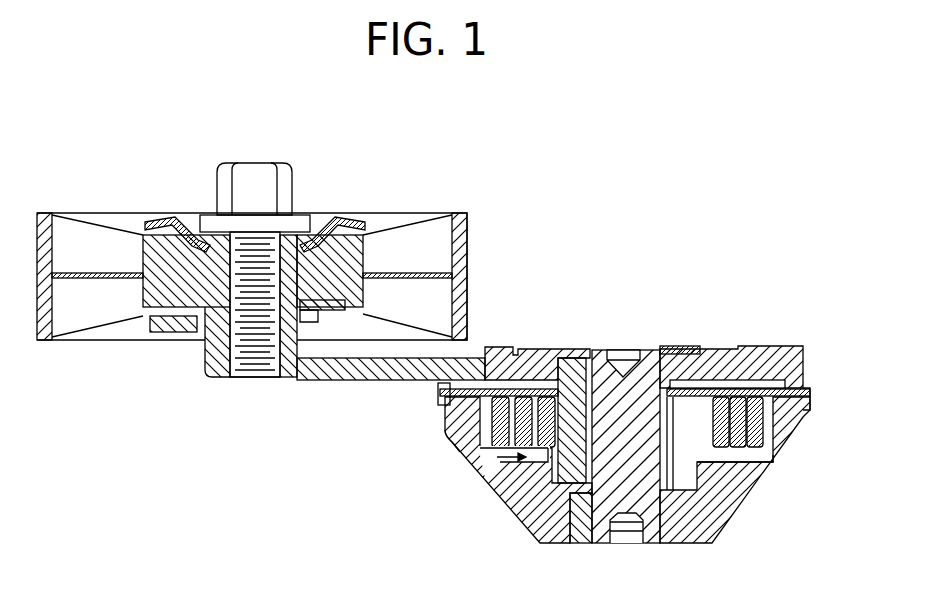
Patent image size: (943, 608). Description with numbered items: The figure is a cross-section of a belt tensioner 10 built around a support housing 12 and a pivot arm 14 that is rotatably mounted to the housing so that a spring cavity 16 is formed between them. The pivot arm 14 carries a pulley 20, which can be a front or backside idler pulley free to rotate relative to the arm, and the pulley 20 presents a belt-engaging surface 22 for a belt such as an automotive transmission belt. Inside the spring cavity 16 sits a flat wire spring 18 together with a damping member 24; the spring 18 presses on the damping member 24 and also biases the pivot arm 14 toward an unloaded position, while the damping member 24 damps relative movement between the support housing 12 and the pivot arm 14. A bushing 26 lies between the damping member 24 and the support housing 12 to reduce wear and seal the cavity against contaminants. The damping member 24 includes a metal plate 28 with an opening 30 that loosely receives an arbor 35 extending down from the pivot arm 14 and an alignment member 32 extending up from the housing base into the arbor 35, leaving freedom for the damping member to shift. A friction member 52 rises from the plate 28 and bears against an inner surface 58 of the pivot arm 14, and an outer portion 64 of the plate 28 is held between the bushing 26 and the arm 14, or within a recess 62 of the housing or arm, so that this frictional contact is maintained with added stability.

The belt tensioner 10 is at (598, 218).
The support housing 12 is at (767, 468).
The pivot arm 14 is at (328, 367).
The spring cavity 16 is at (487, 463).
The flat wire spring 18 is at (740, 447).
The pulley 20 is at (434, 232).
The belt-engaging surface 22 is at (467, 236).
The damping member 24 is at (721, 386).
The bushing 26 is at (440, 396).
The plate 28 is at (797, 410).
The opening 30 is at (663, 358).
The alignment member 32 is at (654, 362).
The arbor 35 is at (568, 482).
The friction member 52 is at (507, 383).
The inner surface 58 is at (480, 387).
The recess 62 is at (463, 381).
The outer portion 64 is at (446, 424).